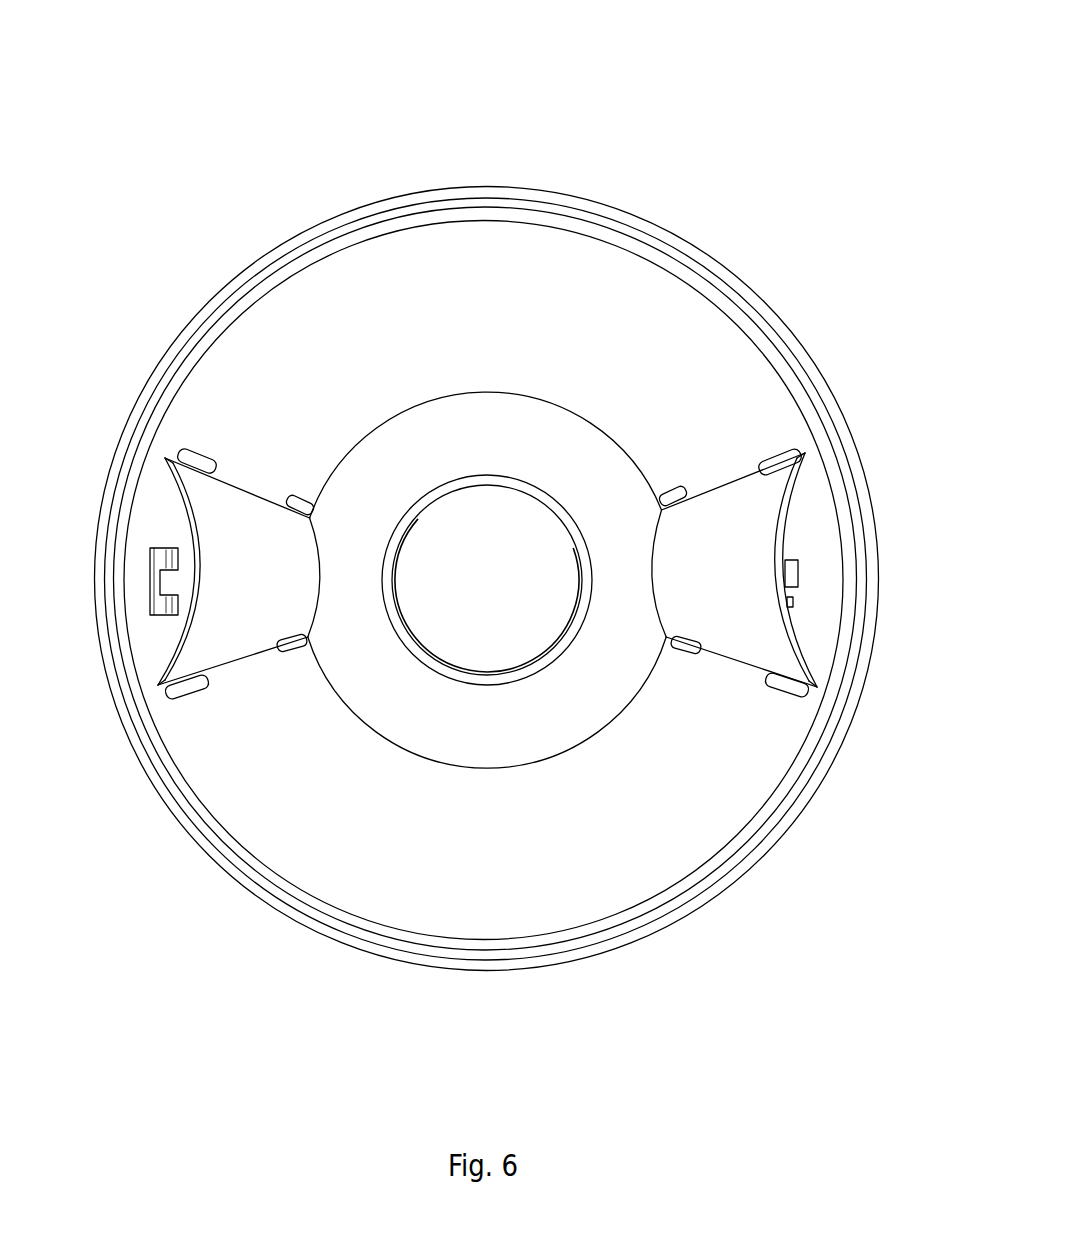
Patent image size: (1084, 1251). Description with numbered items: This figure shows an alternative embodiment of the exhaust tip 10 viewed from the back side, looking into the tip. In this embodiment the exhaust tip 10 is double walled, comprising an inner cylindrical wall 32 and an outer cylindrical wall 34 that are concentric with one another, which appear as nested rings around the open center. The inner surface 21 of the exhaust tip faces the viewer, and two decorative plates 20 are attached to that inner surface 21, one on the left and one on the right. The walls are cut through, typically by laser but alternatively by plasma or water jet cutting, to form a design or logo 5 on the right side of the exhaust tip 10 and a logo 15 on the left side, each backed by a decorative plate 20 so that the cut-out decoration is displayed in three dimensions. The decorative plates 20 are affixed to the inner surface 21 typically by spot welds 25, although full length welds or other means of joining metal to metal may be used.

The exhaust tip 10 is at (521, 133).
The inner cylindrical wall 32 is at (528, 212).
The outer cylindrical wall 34 is at (620, 211).
The inner surface 21 is at (623, 322).
The decorative plate 20 is at (502, 524).
The logo 15 is at (134, 408).
The spot welds 25 is at (156, 812).
The logo 5 is at (792, 572).